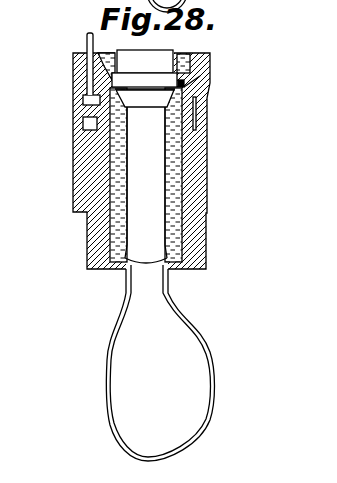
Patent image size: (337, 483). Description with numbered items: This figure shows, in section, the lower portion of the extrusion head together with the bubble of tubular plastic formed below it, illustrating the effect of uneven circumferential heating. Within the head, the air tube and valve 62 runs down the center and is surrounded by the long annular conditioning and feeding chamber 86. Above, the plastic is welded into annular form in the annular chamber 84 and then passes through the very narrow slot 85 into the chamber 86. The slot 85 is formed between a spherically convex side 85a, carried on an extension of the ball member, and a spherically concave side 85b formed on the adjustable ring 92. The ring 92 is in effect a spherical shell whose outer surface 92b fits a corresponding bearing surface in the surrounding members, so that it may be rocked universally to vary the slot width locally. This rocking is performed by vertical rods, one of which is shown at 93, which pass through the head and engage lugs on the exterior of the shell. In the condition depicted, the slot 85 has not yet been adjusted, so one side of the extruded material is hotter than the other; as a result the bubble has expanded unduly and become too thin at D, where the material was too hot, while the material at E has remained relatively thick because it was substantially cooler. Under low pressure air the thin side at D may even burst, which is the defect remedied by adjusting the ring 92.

The air tube and valve 62 is at (150, 205).
The annular chamber 84 is at (100, 70).
The slot 85 is at (96, 99).
The slot side 85a is at (210, 72).
The slot side 85b is at (181, 84).
The conditioning and feeding chamber 86 is at (122, 174).
The adjustable ring 92 is at (197, 103).
The spherical outer surface 92b is at (207, 137).
The vertical rod 93 is at (87, 42).
The unduly expanded thin region of bubble D is at (215, 377).
The relatively thick region of bubble E is at (106, 377).